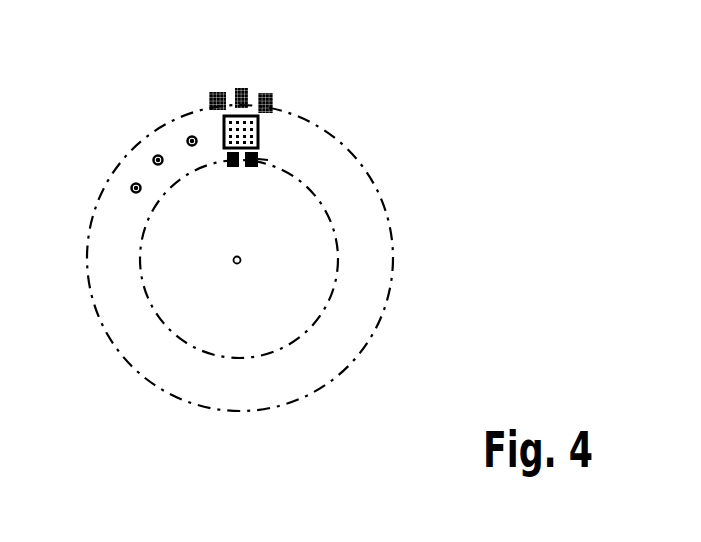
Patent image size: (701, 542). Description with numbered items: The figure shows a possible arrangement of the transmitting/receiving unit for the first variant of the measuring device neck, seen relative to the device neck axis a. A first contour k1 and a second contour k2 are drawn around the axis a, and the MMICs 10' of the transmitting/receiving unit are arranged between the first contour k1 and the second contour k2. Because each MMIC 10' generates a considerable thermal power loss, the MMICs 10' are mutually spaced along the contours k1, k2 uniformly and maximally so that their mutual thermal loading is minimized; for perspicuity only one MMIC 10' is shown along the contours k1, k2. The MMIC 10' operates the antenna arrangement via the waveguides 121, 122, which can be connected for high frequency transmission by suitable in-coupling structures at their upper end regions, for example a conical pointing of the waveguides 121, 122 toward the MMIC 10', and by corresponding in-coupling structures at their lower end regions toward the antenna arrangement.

The waveguide 121 is at (213, 84).
The MMIC 10' is at (179, 102).
The waveguide 122 is at (233, 167).
The device neck axis a is at (240, 258).
The first contour k1 is at (382, 185).
The second contour k2 is at (337, 257).